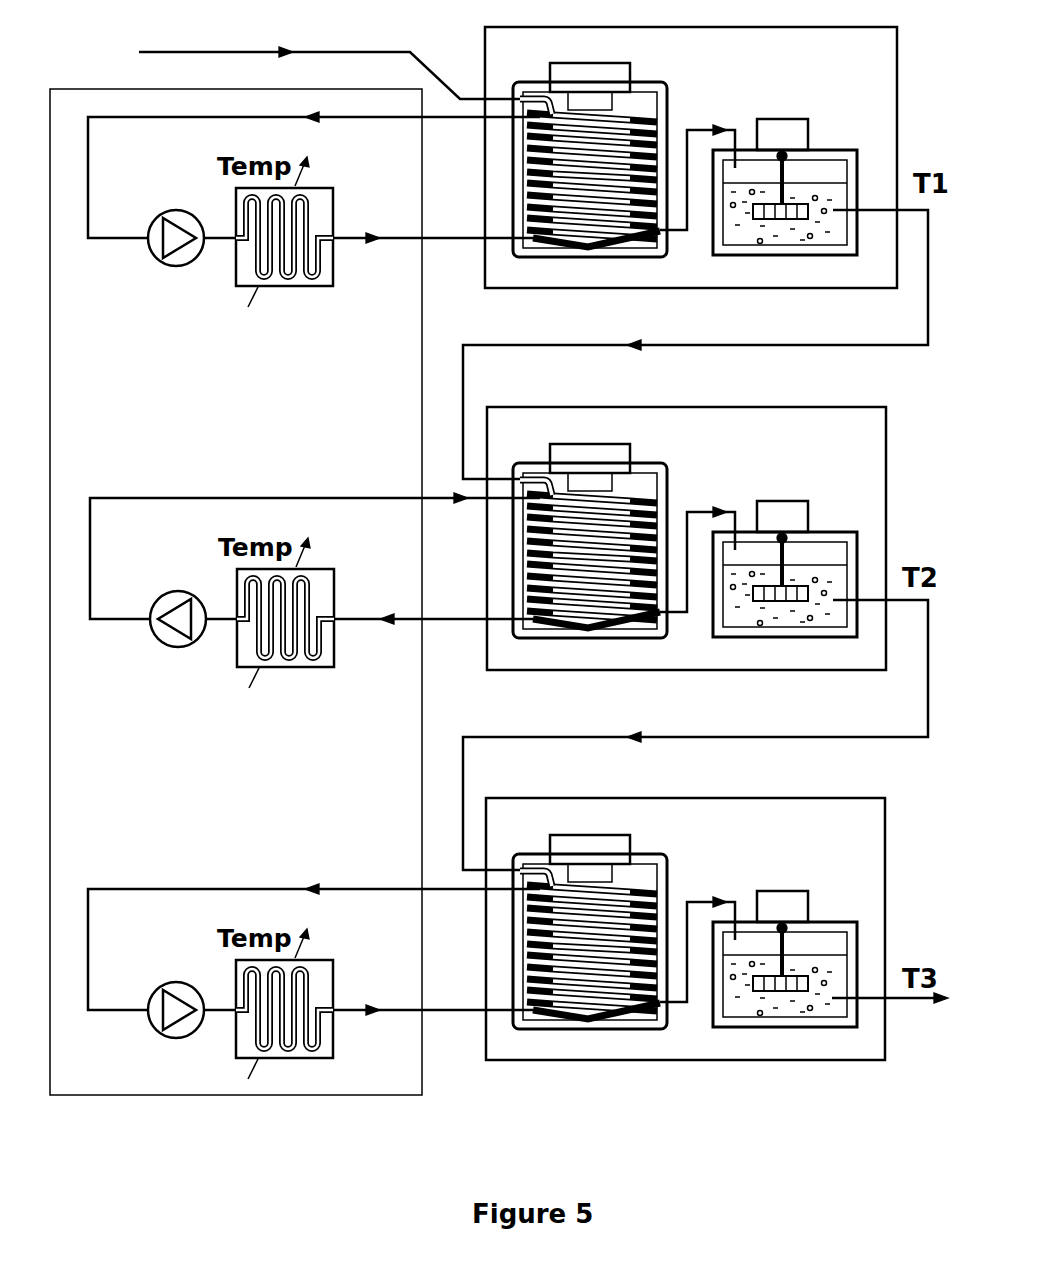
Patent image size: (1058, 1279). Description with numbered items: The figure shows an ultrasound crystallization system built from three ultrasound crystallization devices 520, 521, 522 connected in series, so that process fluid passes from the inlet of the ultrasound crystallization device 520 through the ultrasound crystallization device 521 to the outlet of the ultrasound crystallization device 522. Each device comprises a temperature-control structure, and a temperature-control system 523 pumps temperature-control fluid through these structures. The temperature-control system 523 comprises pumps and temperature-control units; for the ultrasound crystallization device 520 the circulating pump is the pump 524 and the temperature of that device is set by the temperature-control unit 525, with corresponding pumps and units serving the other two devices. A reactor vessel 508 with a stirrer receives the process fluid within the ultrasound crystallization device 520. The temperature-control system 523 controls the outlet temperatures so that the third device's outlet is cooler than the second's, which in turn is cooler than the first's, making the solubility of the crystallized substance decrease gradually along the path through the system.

The reactor vessel with stirrer 508 is at (815, 148).
The ultrasound crystallization device 520 is at (691, 157).
The ultrasound crystallization device 521 is at (836, 448).
The ultrasound crystallization device 522 is at (836, 839).
The temperature-control system 523 is at (343, 1095).
The pump 524 is at (178, 210).
The temperature-control unit 525 is at (288, 290).